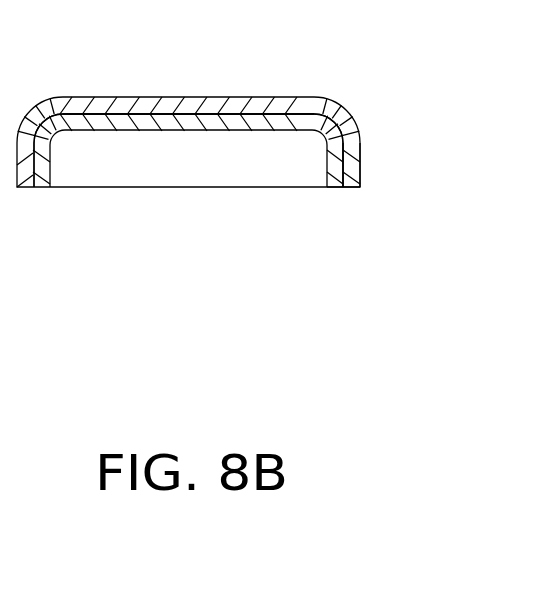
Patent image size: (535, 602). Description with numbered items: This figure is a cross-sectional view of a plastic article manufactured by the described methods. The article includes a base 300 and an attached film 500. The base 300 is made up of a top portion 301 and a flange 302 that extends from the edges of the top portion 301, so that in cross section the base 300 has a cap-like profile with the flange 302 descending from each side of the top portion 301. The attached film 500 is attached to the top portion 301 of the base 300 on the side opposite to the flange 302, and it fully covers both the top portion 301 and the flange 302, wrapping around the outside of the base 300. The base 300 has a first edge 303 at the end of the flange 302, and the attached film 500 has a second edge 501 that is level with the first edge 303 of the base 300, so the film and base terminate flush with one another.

The attached film 500 is at (127, 105).
The base 300 is at (118, 122).
The top portion 301 is at (199, 108).
The flange 302 is at (349, 152).
The first edge 303 is at (335, 187).
The second edge 501 is at (350, 187).